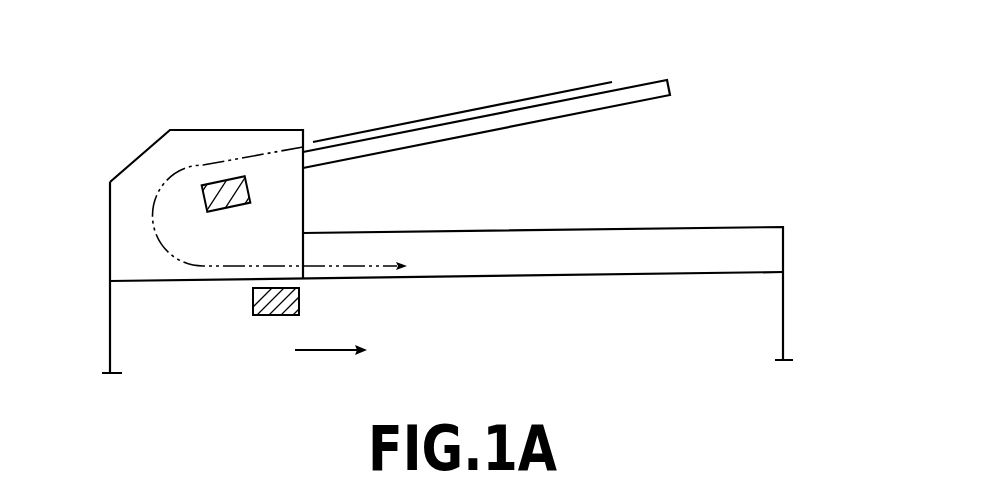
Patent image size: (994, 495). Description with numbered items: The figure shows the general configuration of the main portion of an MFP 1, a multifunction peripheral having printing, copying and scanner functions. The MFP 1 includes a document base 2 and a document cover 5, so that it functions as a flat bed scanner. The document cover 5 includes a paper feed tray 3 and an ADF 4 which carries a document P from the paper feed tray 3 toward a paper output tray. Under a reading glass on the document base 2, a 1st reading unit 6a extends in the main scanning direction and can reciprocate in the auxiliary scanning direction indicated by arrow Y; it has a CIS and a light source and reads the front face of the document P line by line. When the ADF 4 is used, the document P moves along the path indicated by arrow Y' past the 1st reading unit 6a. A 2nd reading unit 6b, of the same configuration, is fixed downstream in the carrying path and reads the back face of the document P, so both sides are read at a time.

The MFP (multifunction peripheral) 1 is at (784, 142).
The document base 2 is at (776, 320).
The paper feed tray 3 is at (635, 99).
The ADF (Automatic Document Feeder) 4 is at (271, 104).
The document cover 5 is at (776, 247).
The 1st reading unit 6a is at (299, 300).
The 2nd reading unit 6b is at (227, 208).
The document P is at (573, 87).